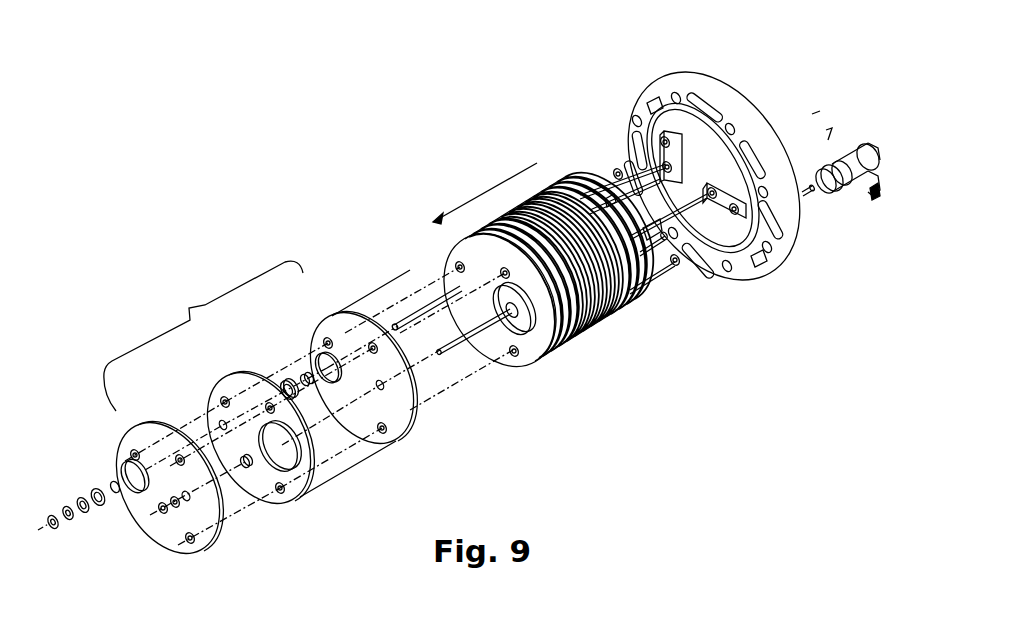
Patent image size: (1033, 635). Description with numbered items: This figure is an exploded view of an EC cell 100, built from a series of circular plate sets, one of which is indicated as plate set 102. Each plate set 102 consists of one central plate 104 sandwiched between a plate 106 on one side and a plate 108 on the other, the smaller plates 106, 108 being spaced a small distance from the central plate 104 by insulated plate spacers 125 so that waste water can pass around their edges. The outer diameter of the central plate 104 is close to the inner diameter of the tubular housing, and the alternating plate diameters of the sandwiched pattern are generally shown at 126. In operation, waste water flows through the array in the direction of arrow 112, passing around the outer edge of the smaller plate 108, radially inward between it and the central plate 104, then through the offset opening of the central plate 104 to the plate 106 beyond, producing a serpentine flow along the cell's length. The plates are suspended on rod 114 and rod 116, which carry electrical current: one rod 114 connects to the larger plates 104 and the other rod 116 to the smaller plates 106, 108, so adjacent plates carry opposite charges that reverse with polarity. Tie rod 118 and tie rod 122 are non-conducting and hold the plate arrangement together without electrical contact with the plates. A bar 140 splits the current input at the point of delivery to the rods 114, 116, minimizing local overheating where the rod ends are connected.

The EC cell 100 is at (702, 338).
The plate set 102 is at (187, 300).
The central plate 104 is at (295, 497).
The plate 106 is at (195, 550).
The plate 108 is at (400, 430).
The arrow 112 is at (474, 203).
The rod 114 is at (635, 192).
The rod 116 is at (714, 264).
The tie rod 118 is at (610, 187).
The tie rod 122 is at (641, 273).
The insulated plate spacer 125 is at (462, 250).
The plate diameter 126 is at (516, 354).
The bar 140 is at (680, 157).